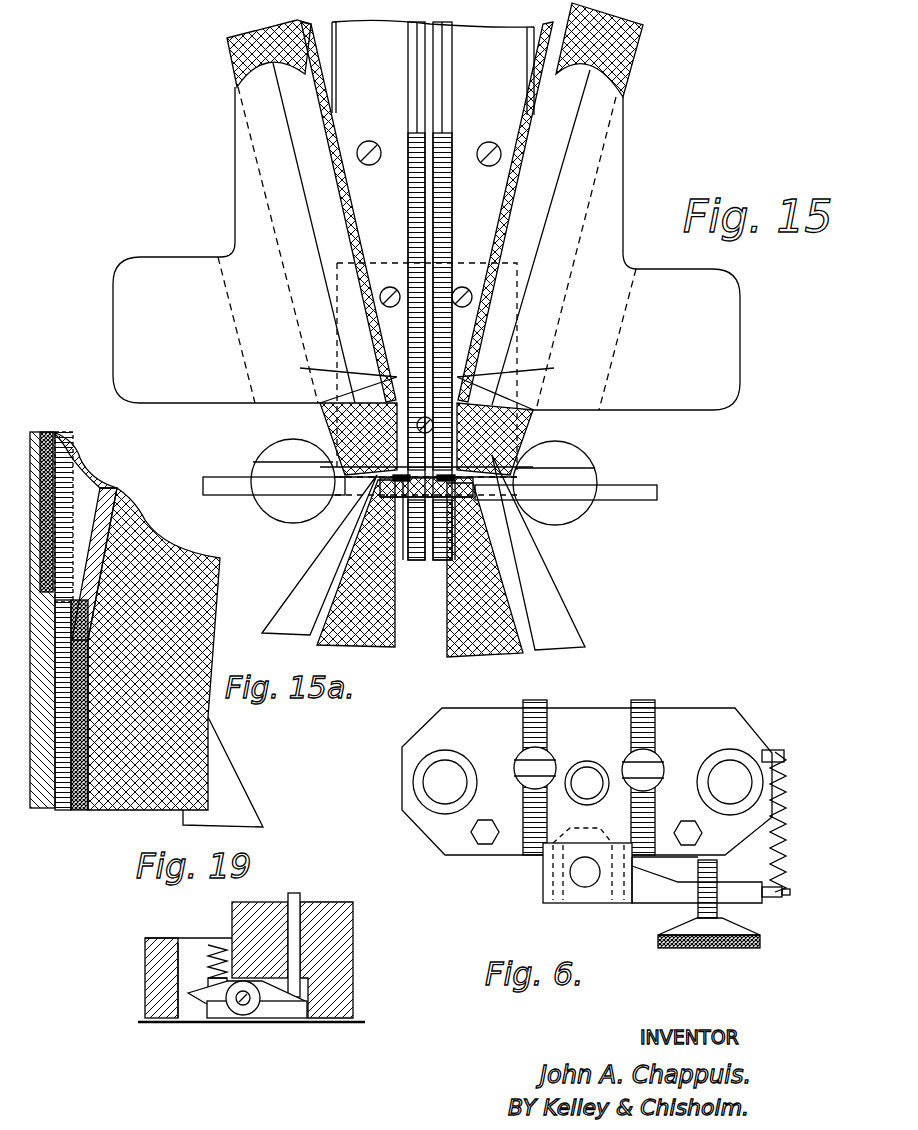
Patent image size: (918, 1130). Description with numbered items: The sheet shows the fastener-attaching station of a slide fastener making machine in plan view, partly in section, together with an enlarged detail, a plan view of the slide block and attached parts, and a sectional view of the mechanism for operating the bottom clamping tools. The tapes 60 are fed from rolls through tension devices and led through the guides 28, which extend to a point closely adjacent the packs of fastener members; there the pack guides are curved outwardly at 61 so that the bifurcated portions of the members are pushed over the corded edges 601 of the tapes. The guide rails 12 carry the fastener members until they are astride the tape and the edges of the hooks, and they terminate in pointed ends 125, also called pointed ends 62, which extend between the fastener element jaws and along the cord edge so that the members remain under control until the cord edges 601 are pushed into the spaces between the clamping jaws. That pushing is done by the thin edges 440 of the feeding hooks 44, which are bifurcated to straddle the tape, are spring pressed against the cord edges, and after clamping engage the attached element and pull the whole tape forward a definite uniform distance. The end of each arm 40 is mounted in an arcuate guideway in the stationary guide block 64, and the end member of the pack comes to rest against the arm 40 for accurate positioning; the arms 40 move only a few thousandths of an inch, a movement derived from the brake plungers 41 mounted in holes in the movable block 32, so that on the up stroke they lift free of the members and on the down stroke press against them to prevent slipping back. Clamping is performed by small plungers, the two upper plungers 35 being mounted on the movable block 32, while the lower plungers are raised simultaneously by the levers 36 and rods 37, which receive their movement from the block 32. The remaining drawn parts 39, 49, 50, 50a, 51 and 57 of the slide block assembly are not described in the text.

In FIG. 15, the guide rail 12 is at (430, 22).
In FIG. 15A, the guide rail 12 is at (68, 445).
In FIG. 15, the tape guide 28 is at (245, 205).
In FIG. 6, the movable block 32 is at (438, 835).
In FIG. 15, the upper plunger 35 is at (429, 520).
In FIG. 19, the lever 36 is at (280, 1004).
In FIG. 19, the rod 37 is at (299, 897).
In FIG. 15A, the strip 39 is at (45, 432).
In FIG. 15, the arm 40 is at (219, 488).
In FIG. 15, the brake plunger 41 is at (283, 484).
In FIG. 6, the brake plunger 41 is at (618, 768).
In FIG. 15, the feeding hook 44 is at (553, 620).
In FIG. 15A, the feeding hook 44 is at (218, 752).
In FIG. 6, the housing 49 is at (590, 880).
In FIG. 6, the bracket 50 is at (665, 897).
In FIG. 6, the bracket arm 50a is at (582, 830).
In FIG. 6, the foot screw 51 is at (706, 932).
In FIG. 6, the spring 57 is at (780, 850).
In FIG. 15, the tape 60 is at (235, 53).
In FIG. 15A, the tape 60 is at (209, 648).
In FIG. 15, the outwardly curved pack guide portion 61 is at (425, 433).
In FIG. 15, the pointed end of rail 62 is at (395, 400).
In FIG. 15A, the stationary guide block 64 is at (148, 716).
In FIG. 15, the pointed end of guide rail 125 is at (340, 420).
In FIG. 15A, the pointed end of guide rail 125 is at (70, 560).
In FIG. 15, the thin edge of feeding hook 440 is at (321, 466).
In FIG. 15A, the thin edge of feeding hook 440 is at (166, 573).
In FIG. 15, the corded edge of tape 601 is at (365, 296).
In FIG. 15A, the corded edge of tape 601 is at (112, 503).